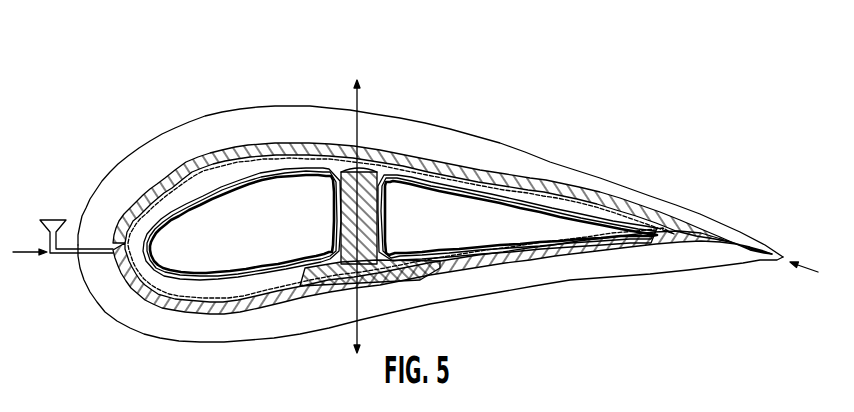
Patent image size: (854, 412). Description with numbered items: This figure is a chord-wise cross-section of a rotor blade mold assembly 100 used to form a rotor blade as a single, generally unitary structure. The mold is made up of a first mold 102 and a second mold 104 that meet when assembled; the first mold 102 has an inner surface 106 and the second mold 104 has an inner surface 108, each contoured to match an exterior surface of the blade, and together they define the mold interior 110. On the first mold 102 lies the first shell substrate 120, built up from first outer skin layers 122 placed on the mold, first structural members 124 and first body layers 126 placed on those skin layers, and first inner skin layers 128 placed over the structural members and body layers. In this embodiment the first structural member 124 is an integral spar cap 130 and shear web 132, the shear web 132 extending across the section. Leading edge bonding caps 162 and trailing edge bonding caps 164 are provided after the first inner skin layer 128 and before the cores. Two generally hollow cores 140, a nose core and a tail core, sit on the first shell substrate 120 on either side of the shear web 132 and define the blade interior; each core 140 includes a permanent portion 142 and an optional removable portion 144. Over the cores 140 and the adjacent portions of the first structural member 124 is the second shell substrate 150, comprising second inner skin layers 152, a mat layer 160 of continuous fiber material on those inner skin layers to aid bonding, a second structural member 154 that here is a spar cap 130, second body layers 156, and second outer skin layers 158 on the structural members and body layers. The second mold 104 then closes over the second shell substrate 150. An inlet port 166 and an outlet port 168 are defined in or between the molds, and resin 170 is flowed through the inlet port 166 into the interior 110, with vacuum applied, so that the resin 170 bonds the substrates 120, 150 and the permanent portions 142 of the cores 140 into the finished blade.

The rotor blade mold assembly 100 is at (95, 74).
The first mold 102 is at (223, 328).
The second mold 104 is at (243, 126).
The inner surface 106 is at (262, 302).
The inner surface 108 is at (204, 158).
The interior 110 is at (223, 230).
The first shell substrate 120 is at (157, 310).
The first outer skin layer 122 is at (534, 263).
The first structural member 124 is at (410, 288).
The first body layer 126 is at (170, 312).
The first inner skin layer 128 is at (627, 253).
The spar cap 130 is at (400, 158).
The shear web 132 is at (303, 250).
The generally hollow core 140 is at (312, 208).
The permanent portion 142 is at (182, 168).
The removable portion 144 is at (185, 202).
The second shell substrate 150 is at (470, 153).
The second inner skin layer 152 is at (522, 192).
The second structural member 154 is at (377, 152).
The second body layer 156 is at (145, 188).
The second outer skin layer 158 is at (156, 175).
The mat layer 160 is at (323, 152).
The leading edge bonding cap 162 is at (112, 256).
The trailing edge bonding cap 164 is at (686, 234).
The inlet port 166 is at (92, 248).
The outlet port 168 is at (358, 306).
The resin 170 is at (62, 219).